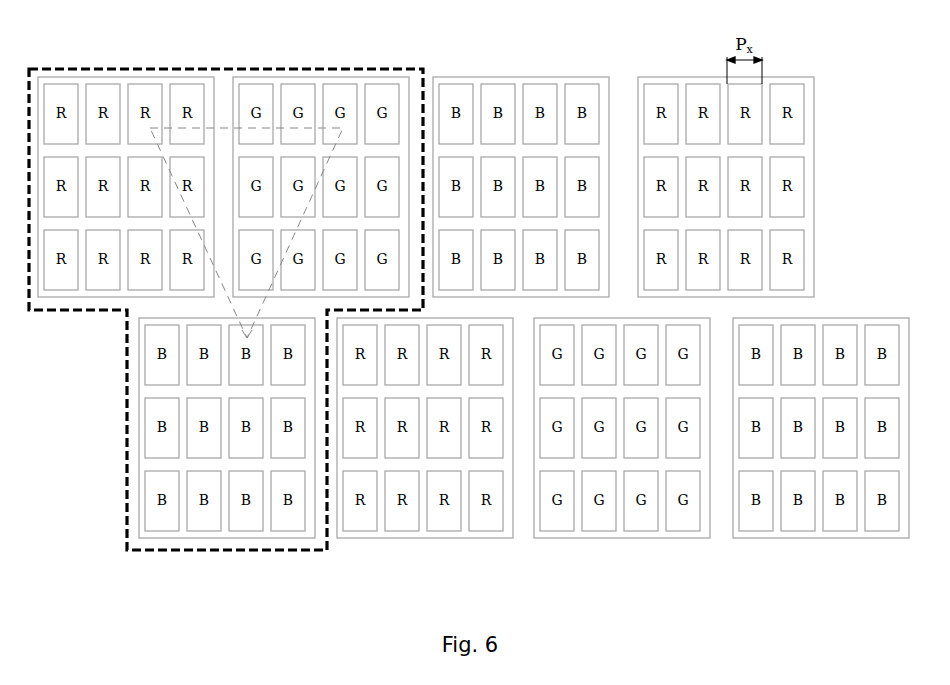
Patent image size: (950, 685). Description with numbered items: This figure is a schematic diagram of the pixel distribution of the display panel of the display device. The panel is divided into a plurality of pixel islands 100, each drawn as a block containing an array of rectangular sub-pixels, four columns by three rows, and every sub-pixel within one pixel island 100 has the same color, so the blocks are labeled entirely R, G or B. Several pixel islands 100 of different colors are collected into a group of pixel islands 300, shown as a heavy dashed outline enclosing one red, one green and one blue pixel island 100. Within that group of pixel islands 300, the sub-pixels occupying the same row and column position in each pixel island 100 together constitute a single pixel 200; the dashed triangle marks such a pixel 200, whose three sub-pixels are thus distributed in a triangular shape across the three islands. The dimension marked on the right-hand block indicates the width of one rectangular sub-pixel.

The pixel island 100 is at (502, 77).
The pixel 200 is at (218, 128).
The group of pixel islands 300 is at (324, 68).